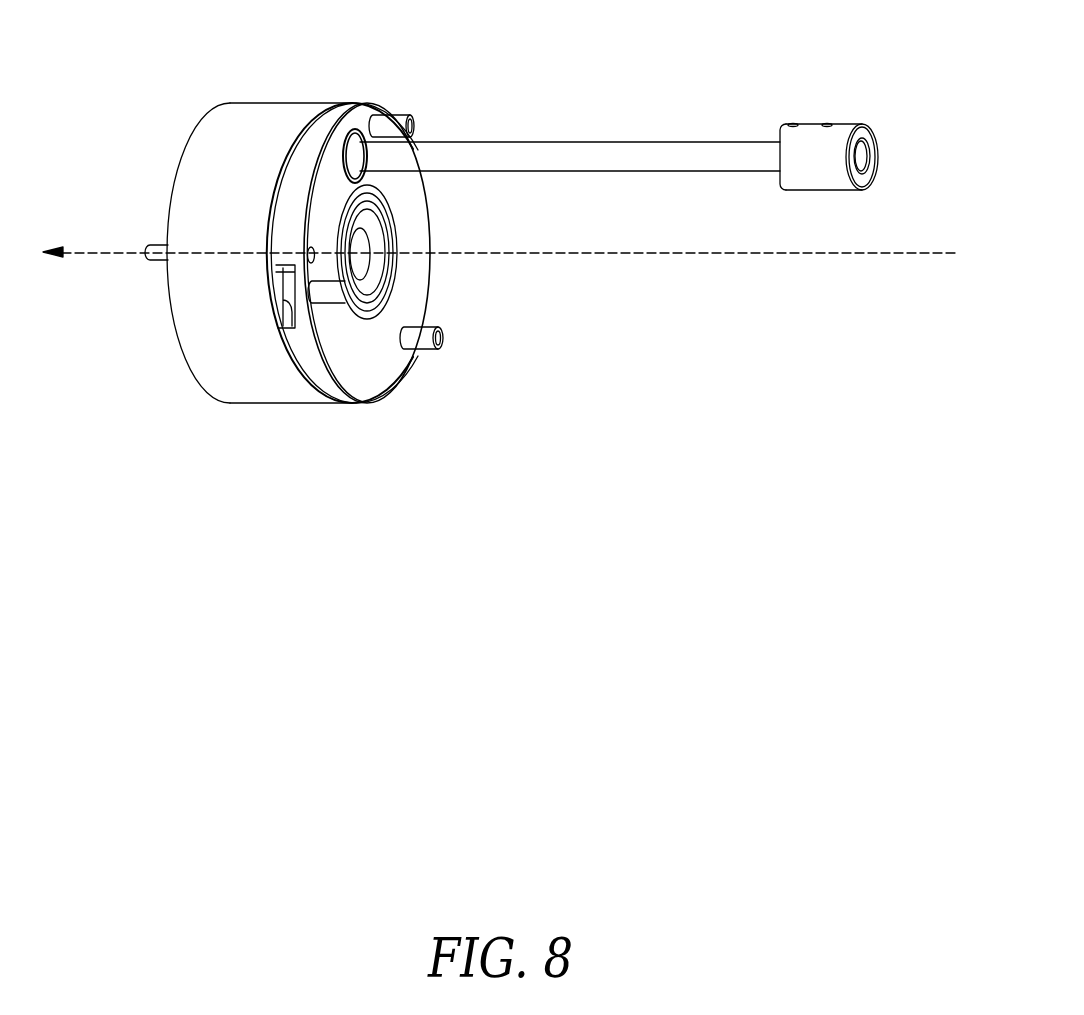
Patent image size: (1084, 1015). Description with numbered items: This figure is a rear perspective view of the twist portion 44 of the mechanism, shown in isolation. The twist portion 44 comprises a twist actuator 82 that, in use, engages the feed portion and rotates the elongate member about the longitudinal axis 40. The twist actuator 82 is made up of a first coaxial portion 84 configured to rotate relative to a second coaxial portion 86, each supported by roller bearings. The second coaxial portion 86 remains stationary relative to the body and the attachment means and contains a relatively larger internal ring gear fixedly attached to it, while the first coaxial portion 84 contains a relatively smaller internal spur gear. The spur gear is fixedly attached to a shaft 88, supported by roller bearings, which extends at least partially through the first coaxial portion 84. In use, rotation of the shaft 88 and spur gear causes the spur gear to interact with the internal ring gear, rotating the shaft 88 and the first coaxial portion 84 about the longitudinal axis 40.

The longitudinal axis 40 is at (882, 253).
The twist portion 44 is at (296, 283).
The twist actuator 82 is at (319, 129).
The first coaxial portion 84 is at (380, 378).
The second coaxial portion 86 is at (243, 377).
The shaft 88 is at (578, 142).